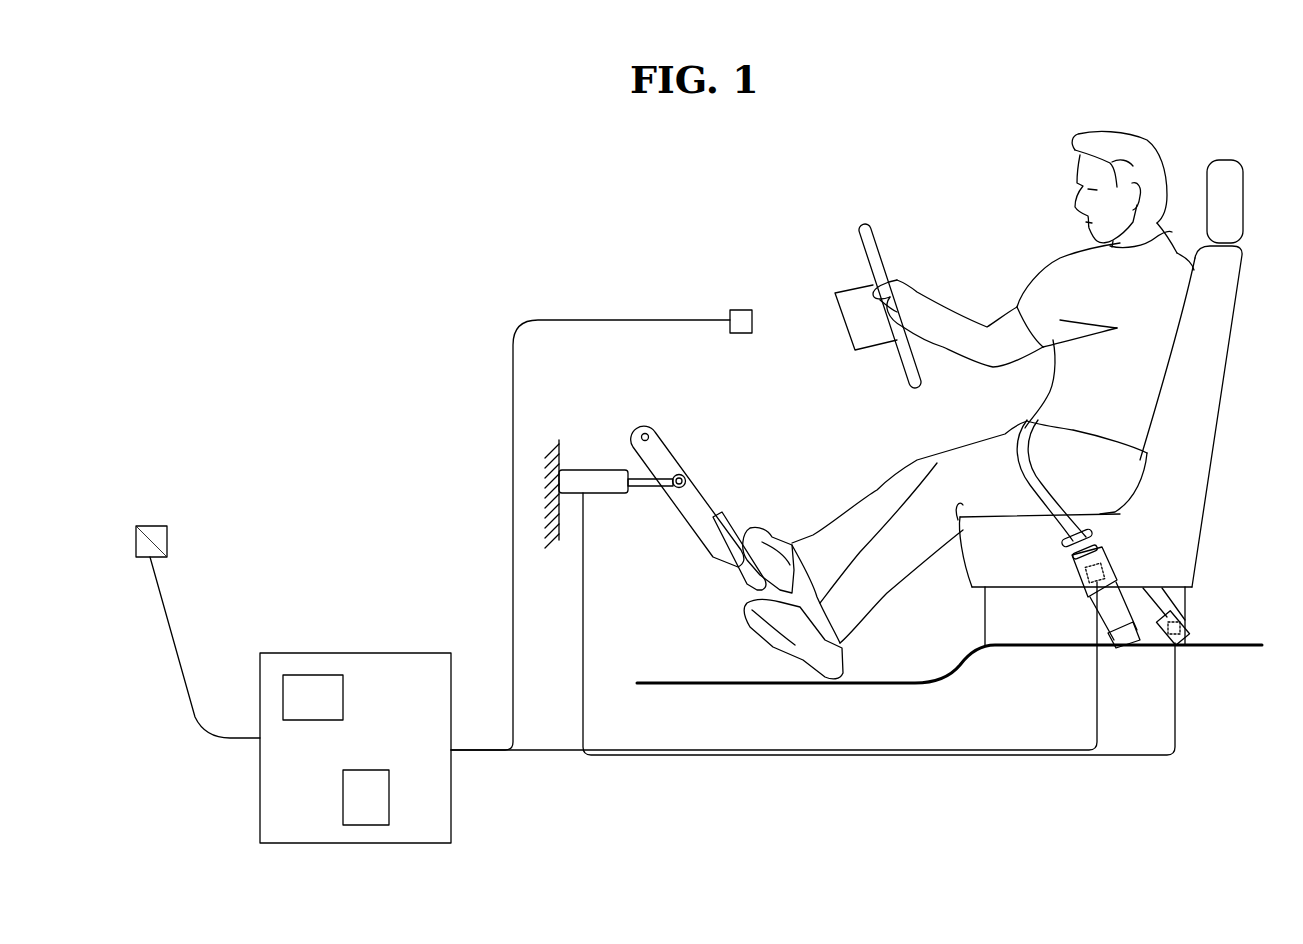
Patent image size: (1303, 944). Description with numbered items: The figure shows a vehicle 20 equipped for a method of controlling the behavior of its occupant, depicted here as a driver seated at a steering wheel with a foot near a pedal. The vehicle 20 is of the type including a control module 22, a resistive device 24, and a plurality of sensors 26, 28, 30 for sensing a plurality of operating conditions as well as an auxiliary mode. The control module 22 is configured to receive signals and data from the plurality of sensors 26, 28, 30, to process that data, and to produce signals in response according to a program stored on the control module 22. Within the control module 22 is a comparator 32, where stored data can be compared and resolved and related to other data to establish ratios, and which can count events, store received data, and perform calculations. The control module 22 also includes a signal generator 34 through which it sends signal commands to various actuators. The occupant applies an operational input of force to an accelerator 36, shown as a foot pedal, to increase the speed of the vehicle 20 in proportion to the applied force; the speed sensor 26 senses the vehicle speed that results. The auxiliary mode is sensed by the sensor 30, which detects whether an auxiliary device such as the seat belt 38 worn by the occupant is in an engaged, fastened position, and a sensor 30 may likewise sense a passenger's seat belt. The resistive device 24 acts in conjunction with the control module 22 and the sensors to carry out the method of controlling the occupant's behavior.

The vehicle 20 is at (398, 250).
The control module 22 is at (388, 653).
The resistive device 24 is at (601, 474).
The speed sensor 26 is at (330, 675).
The sensor 28 is at (389, 797).
The sensor 30 is at (1082, 583).
The comparator 32 is at (152, 526).
The signal generator 34 is at (740, 310).
The accelerator 36 is at (696, 503).
The seat belt 38 is at (1030, 425).